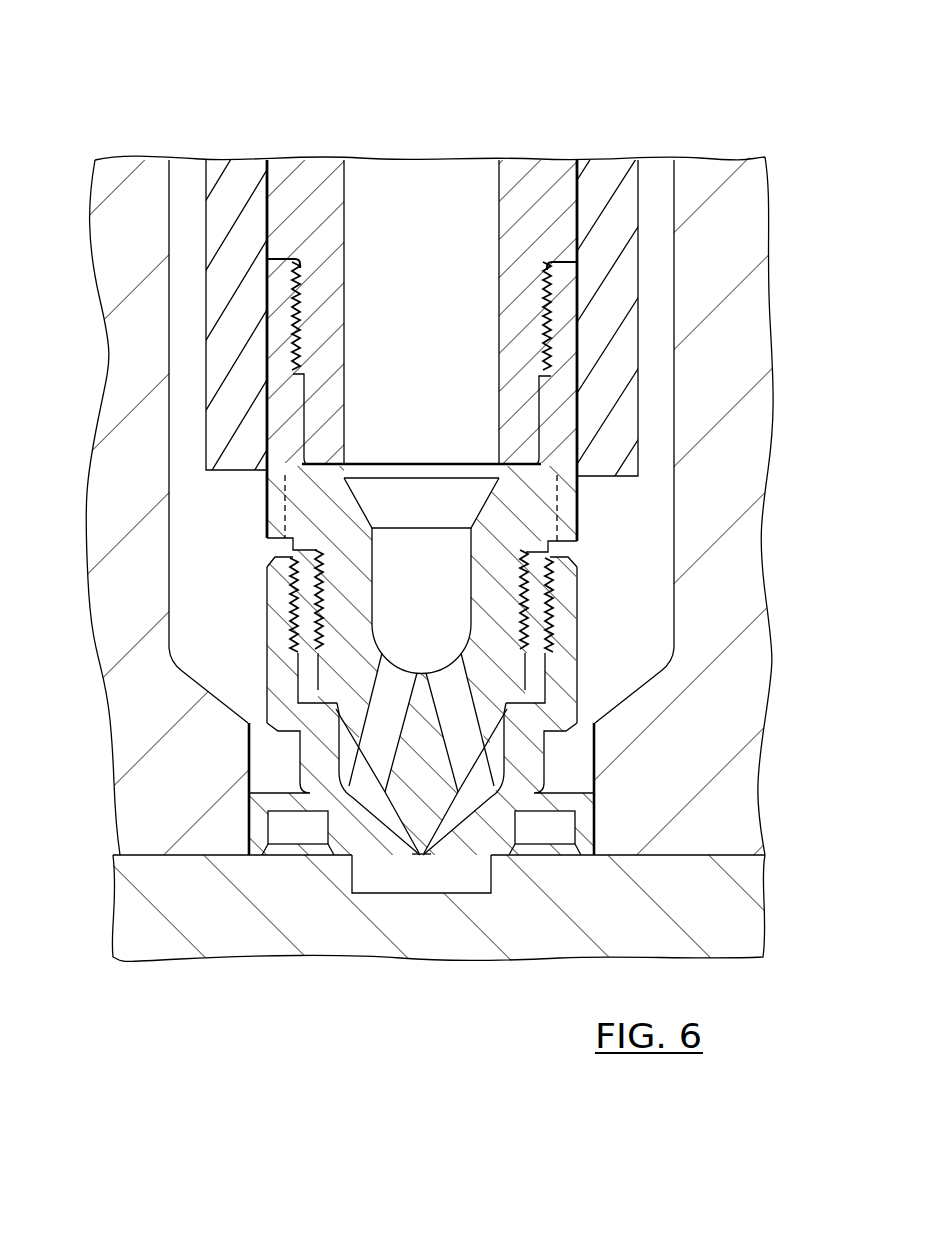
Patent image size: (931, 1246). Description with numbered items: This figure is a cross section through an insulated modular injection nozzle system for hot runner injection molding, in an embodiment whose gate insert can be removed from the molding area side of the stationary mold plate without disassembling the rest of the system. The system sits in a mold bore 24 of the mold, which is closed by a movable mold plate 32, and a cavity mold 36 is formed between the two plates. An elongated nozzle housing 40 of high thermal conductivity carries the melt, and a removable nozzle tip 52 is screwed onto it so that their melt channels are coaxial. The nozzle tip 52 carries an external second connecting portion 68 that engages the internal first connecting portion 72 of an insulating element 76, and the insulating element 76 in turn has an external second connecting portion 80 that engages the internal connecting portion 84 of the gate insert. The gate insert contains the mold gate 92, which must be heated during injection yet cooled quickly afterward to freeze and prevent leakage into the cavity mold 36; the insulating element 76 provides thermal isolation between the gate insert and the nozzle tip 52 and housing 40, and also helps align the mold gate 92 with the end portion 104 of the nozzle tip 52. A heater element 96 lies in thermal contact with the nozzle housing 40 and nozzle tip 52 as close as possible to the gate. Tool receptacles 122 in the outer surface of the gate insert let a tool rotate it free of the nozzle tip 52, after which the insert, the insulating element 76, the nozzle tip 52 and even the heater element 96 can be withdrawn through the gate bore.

The nozzle housing 40 is at (548, 172).
The mold bore 24 is at (203, 304).
The heater element 96 is at (628, 405).
The nozzle tip 52 is at (533, 512).
The connecting portion 84 is at (290, 607).
The second connecting portion 80 is at (305, 700).
The first connecting portion 72 is at (536, 556).
The second connecting portion 68 is at (370, 605).
The insulating element 76 is at (422, 758).
The movable mold plate 32 is at (168, 891).
The cavity mold 36 is at (473, 891).
The tool receptacles 122 is at (292, 845).
The mold gate 92 is at (408, 842).
The end portion 104 is at (420, 857).